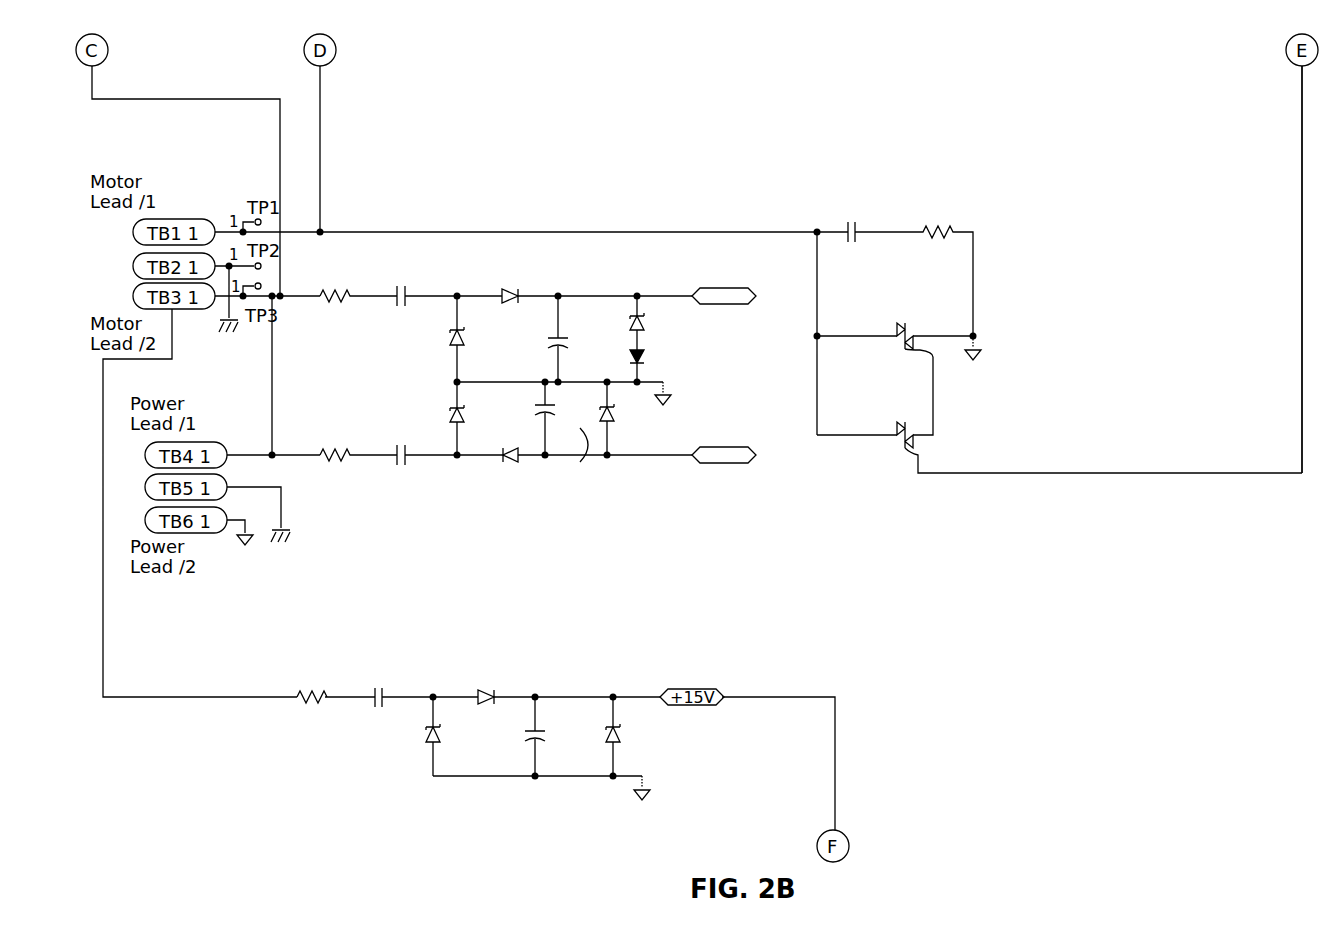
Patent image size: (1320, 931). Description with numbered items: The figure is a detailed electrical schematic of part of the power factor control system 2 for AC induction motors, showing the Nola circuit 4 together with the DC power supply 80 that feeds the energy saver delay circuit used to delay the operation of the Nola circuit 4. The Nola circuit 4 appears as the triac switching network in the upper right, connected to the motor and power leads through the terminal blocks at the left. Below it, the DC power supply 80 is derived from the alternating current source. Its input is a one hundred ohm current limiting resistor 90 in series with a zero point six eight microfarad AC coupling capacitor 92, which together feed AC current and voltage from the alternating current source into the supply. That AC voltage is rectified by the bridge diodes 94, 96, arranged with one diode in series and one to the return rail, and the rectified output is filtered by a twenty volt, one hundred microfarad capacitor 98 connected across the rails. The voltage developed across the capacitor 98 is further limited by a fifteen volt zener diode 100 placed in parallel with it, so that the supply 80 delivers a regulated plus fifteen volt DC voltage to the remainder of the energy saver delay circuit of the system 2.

The power factor control system 2 is at (1060, 848).
The Nola '177 circuit 4 is at (776, 508).
The DC power supply 80 is at (352, 602).
The current limiting resistor 90 is at (300, 690).
The AC coupling capacitor 92 is at (377, 655).
The bridge diode 94 is at (435, 733).
The bridge diode 96 is at (482, 688).
The filter capacitor 98 is at (532, 740).
The zener diode 100 is at (618, 740).